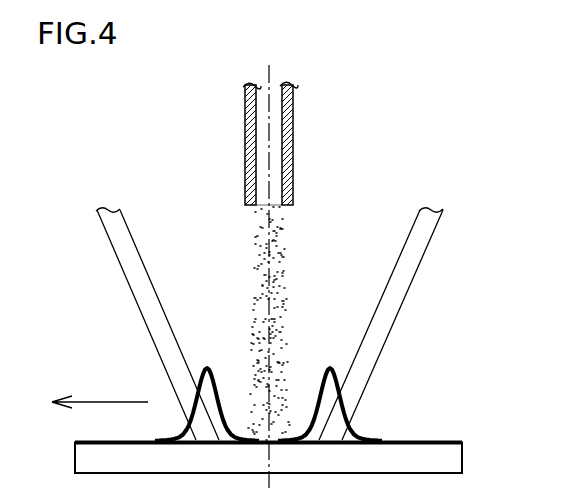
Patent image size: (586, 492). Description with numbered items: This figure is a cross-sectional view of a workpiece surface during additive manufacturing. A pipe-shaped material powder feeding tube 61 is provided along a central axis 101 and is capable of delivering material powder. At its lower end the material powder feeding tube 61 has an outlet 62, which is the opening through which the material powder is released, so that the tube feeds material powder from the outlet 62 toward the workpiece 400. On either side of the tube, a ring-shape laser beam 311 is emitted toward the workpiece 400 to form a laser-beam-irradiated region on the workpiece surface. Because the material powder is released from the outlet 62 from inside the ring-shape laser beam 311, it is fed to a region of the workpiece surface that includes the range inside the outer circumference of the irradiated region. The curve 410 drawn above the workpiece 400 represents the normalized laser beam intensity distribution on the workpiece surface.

The material powder feeding tube 61 is at (295, 105).
The outlet 62 is at (280, 207).
The central axis 101 is at (272, 262).
The ring-shape laser beam 311 is at (118, 263).
The curve 410 is at (357, 430).
The workpiece 400 is at (465, 457).